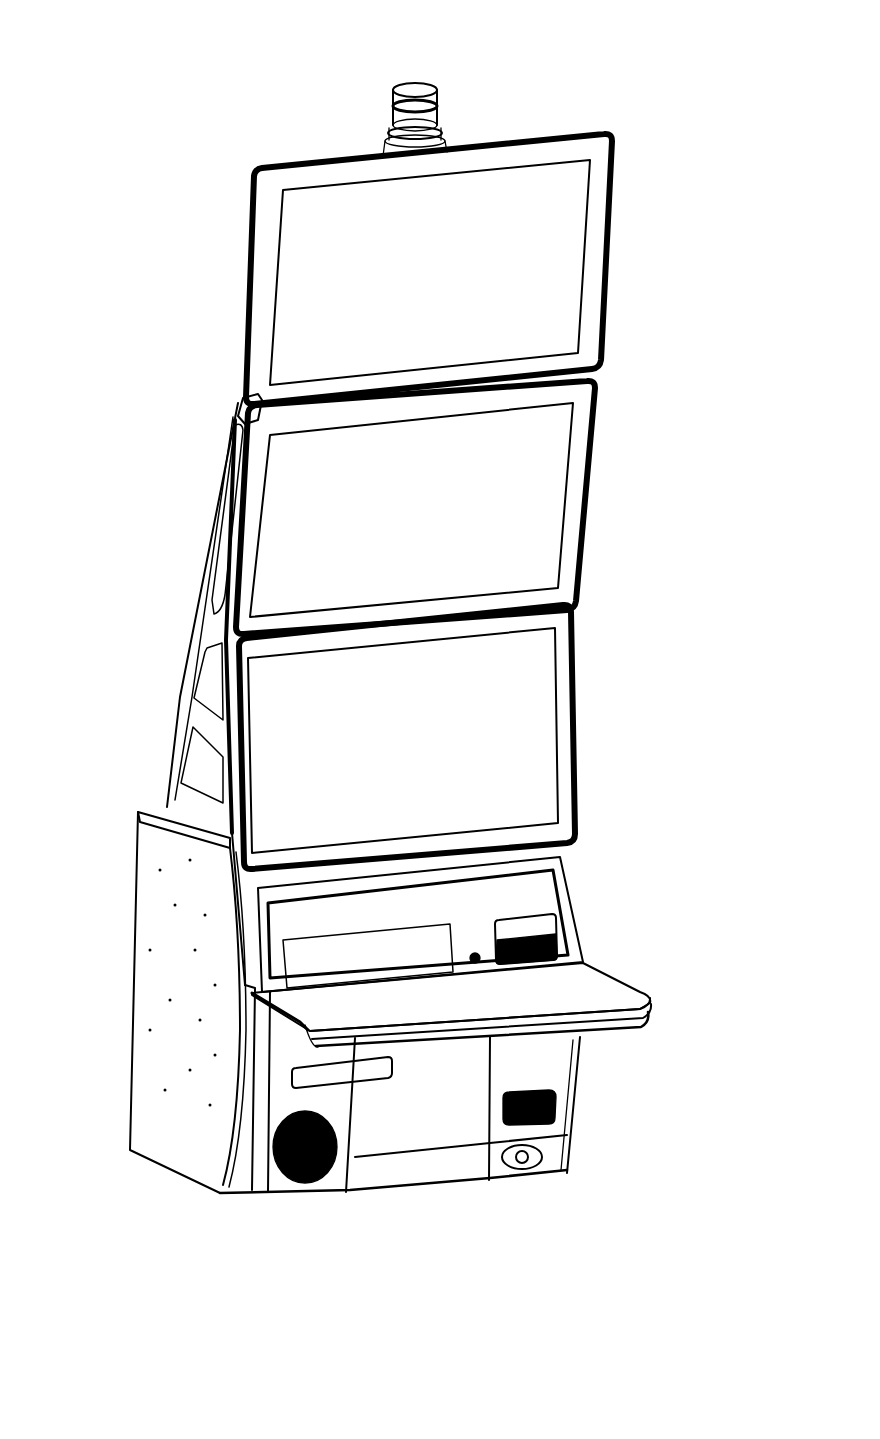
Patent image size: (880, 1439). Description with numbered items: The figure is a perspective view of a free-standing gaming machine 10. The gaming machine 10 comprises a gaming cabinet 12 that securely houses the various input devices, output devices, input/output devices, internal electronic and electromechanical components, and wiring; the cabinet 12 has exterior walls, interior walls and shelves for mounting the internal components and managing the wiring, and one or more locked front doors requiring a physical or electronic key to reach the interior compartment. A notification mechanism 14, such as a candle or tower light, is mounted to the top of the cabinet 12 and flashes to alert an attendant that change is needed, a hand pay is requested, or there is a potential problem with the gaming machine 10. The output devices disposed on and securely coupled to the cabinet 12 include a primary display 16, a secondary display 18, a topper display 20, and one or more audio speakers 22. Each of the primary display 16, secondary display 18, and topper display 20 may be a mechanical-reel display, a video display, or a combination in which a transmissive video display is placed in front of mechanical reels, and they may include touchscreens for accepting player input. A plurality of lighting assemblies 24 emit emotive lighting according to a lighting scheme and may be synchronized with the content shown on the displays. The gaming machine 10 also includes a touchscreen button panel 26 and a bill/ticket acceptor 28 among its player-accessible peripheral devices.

The gaming machine 10 is at (91, 87).
The gaming cabinet 12 is at (165, 778).
The notification mechanism 14 is at (442, 108).
The primary display 16 is at (532, 708).
The secondary display 18 is at (488, 514).
The topper display 20 is at (523, 265).
The audio speaker 22 is at (267, 1150).
The lighting assembly 24 is at (250, 267).
The touchscreen button panel 26 is at (553, 983).
The bill/ticket acceptor 28 is at (553, 940).